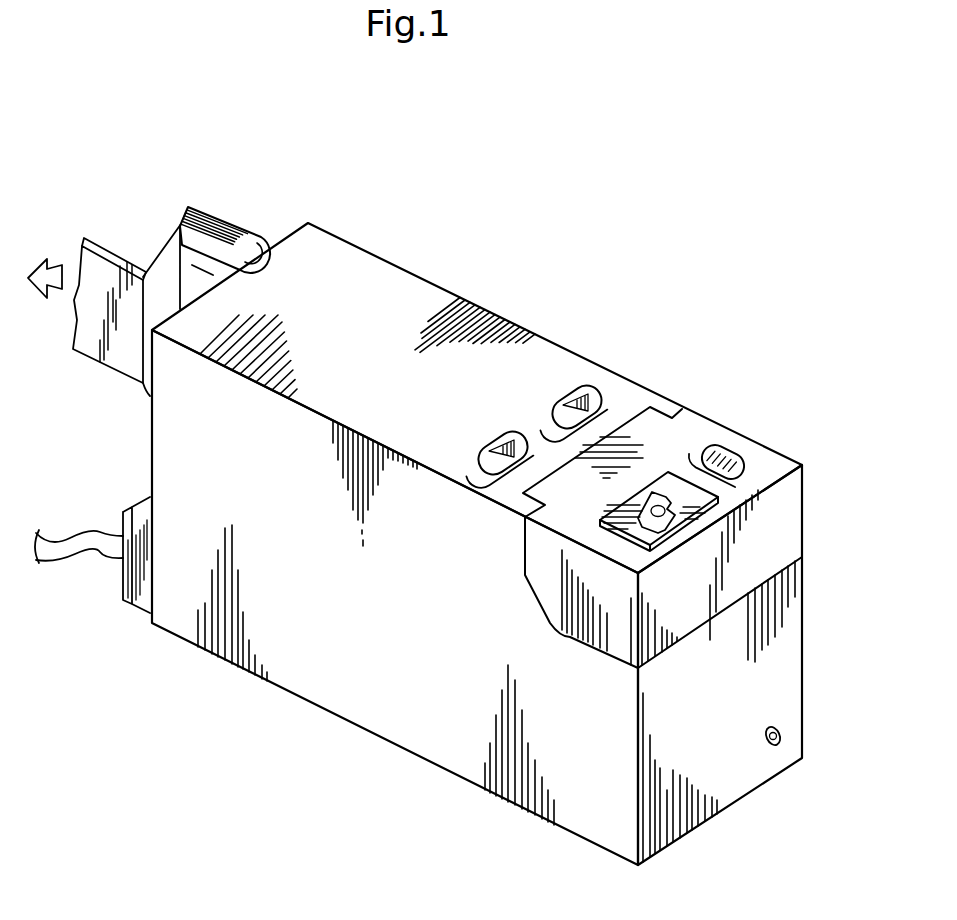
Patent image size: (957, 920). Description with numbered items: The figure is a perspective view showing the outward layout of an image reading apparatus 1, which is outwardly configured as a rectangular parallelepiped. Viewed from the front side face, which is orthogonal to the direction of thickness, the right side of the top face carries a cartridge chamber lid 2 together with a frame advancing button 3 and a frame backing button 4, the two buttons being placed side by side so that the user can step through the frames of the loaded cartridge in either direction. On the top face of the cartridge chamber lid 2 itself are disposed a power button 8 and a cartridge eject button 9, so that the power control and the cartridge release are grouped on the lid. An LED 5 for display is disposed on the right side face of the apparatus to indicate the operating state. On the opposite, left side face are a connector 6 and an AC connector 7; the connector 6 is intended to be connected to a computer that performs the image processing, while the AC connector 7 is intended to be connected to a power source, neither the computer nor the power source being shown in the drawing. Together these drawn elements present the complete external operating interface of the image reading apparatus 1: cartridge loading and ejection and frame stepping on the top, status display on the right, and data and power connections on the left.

The image reading apparatus 1 is at (191, 664).
The cartridge chamber lid 2 is at (783, 512).
The frame advancing button 3 is at (578, 378).
The frame backing button 4 is at (487, 467).
The LED 5 is at (782, 742).
The connector 6 is at (256, 250).
The AC connector 7 is at (147, 567).
The power button 8 is at (725, 453).
The cartridge eject button 9 is at (643, 497).